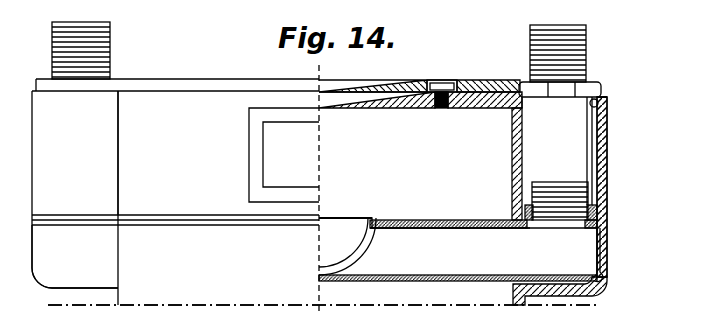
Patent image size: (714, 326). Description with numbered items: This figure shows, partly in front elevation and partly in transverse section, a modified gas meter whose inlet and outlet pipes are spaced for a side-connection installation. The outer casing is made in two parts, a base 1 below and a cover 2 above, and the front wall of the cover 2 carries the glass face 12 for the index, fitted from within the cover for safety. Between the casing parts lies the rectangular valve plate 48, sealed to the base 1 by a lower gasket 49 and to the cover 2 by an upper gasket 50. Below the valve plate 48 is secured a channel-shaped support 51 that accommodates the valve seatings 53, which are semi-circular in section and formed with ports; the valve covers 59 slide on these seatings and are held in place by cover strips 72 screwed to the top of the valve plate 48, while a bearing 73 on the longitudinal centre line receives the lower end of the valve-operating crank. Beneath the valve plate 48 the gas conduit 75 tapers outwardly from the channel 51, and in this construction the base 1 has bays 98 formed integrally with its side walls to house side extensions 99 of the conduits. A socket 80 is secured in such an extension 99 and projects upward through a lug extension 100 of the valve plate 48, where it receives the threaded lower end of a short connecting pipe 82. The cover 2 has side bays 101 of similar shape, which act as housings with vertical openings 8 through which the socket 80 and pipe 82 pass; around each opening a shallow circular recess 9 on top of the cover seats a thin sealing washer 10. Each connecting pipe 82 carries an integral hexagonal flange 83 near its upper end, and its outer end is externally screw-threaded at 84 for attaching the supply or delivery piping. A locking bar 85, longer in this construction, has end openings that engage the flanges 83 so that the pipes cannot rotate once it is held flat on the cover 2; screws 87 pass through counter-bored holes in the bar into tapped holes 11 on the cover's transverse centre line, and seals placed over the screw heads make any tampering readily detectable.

The base 1 is at (324, 291).
The cover 2 is at (251, 192).
The vertical openings 8 is at (592, 137).
The circular recess 9 is at (606, 103).
The sealing washers 10 is at (604, 98).
The tapped holes 11 is at (441, 109).
The glass face 12 is at (284, 155).
The valve plate 48 is at (172, 214).
The gasket 49 is at (188, 228).
The gasket 50 is at (214, 214).
The channel-shaped support 51 is at (371, 250).
The valve seatings 53 is at (334, 277).
The valve covers 59 is at (343, 242).
The cover strips 72 is at (369, 219).
The bearing 73 is at (323, 217).
The gas conduit 75 is at (450, 249).
The socket 80 is at (530, 223).
The connecting pipe 82 is at (552, 122).
The flange 83 is at (600, 90).
The external screw thread 84 is at (110, 46).
The locking bar 85 is at (380, 76).
The screws 87 is at (439, 82).
The bays 98 is at (75, 256).
The side extensions 99 is at (560, 278).
The lug extensions 100 is at (608, 223).
The side bays 101 is at (632, 164).